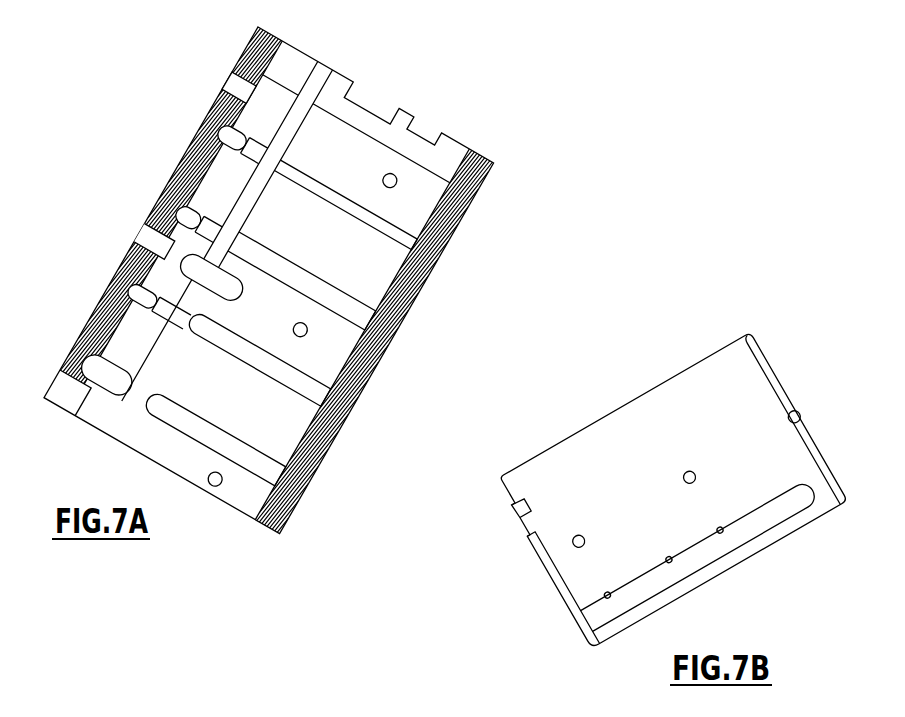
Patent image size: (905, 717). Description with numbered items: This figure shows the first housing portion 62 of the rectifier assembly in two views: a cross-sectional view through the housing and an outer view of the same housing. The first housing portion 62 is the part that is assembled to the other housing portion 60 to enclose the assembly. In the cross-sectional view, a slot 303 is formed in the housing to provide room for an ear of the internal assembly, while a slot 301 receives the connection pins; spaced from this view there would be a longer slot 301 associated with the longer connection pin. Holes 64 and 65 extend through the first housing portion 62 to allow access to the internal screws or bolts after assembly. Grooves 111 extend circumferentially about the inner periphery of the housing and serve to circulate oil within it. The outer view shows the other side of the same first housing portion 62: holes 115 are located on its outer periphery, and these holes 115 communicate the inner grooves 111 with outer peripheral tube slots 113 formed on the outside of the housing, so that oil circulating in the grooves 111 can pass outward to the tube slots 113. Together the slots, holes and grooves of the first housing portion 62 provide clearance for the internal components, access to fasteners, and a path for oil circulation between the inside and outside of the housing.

In FIG. 7A, the first housing portion 62 is at (200, 183).
In FIG. 7B, the first housing portion 62 is at (639, 358).
In FIG. 7A, the slot 303 is at (225, 122).
In FIG. 7A, the grooves 111 is at (418, 243).
In FIG. 7A, the slot 301 is at (190, 265).
In FIG. 7A, the hole 64 is at (142, 235).
In FIG. 7A, the hole 65 is at (53, 386).
In FIG. 7A, the housing portion 60 is at (304, 710).
In FIG. 7B, the outer peripheral tube slots 113 is at (672, 562).
In FIG. 7B, the holes 115 is at (719, 527).